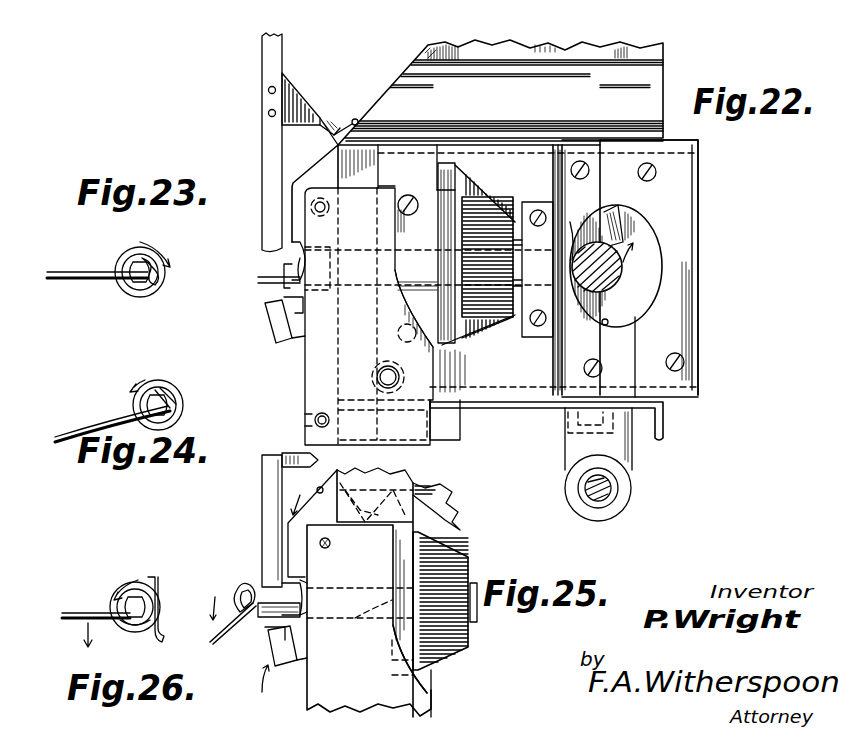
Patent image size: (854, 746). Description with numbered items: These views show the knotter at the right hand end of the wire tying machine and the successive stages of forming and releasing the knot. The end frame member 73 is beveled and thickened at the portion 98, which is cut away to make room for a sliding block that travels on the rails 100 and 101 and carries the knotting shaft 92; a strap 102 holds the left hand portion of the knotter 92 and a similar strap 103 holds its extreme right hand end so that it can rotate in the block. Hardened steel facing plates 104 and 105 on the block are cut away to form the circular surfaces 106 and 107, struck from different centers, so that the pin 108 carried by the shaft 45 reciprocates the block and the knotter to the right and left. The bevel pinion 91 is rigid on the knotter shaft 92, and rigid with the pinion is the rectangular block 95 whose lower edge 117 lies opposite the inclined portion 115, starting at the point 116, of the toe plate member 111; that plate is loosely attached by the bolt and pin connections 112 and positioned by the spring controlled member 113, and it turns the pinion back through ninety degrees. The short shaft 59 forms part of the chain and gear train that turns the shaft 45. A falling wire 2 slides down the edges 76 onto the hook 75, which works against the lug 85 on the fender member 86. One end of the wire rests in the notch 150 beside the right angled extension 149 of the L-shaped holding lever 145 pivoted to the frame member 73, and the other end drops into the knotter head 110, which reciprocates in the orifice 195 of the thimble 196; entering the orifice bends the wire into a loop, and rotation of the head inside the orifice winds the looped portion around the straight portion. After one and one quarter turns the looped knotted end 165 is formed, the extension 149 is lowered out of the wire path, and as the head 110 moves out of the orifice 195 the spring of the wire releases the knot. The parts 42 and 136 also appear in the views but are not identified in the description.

In FIG. 22, the wire 2 is at (368, 112).
In FIG. 25, the wire 2 is at (318, 487).
In FIG. 23, the wire 2 is at (68, 270).
In FIG. 24, the wire 2 is at (68, 435).
In FIG. 26, the wire 2 is at (70, 623).
In FIG. 22, the base plate 42 is at (515, 406).
In FIG. 22, the shaft 45 is at (622, 284).
In FIG. 22, the short shaft 59 is at (612, 496).
In FIG. 22, the end frame member 73 is at (562, 48).
In FIG. 25, the end frame member 73 is at (440, 492).
In FIG. 22, the hook-like projection 75 is at (338, 116).
In FIG. 25, the hook-like projection 75 is at (342, 500).
In FIG. 22, the edges 76 is at (428, 48).
In FIG. 22, the lug or bracket 85 is at (306, 96).
In FIG. 25, the lug or bracket 85 is at (292, 450).
In FIG. 22, the fender member 86 is at (262, 50).
In FIG. 25, the fender member 86 is at (262, 481).
In FIG. 22, the bevel pinion 91 is at (486, 198).
In FIG. 25, the bevel pinion 91 is at (458, 562).
In FIG. 22, the knotting shaft 92 is at (575, 228).
In FIG. 25, the knotting shaft 92 is at (478, 582).
In FIG. 22, the rectangular block 95 is at (438, 265).
In FIG. 25, the rectangular block 95 is at (390, 660).
In FIG. 22, the beveled thickened portion 98 is at (665, 80).
In FIG. 22, the rail 100 is at (635, 368).
In FIG. 22, the rail 101 is at (420, 135).
In FIG. 22, the strap 102 is at (460, 135).
In FIG. 22, the strap 103 is at (540, 204).
In FIG. 22, the facing plate 104 is at (700, 206).
In FIG. 22, the facing plate 105 is at (592, 172).
In FIG. 22, the circular surface 106 is at (660, 262).
In FIG. 22, the circular surface 107 is at (602, 325).
In FIG. 22, the pin 108 is at (624, 213).
In FIG. 25, the knotter head 110 is at (260, 619).
In FIG. 23, the knotter head 110 is at (130, 270).
In FIG. 24, the knotter head 110 is at (146, 403).
In FIG. 26, the knotter head 110 is at (126, 606).
In FIG. 22, the toe plate member 111 is at (305, 370).
In FIG. 25, the toe plate member 111 is at (307, 702).
In FIG. 22, the bolt and pin connections 112 is at (312, 209).
In FIG. 25, the bolt and pin connections 112 is at (331, 544).
In FIG. 22, the spring controlled member 113 is at (376, 375).
In FIG. 22, the inclined or beveled portion 115 is at (410, 305).
In FIG. 25, the inclined or beveled portion 115 is at (438, 673).
In FIG. 22, the point 116 is at (425, 345).
In FIG. 25, the point 116 is at (440, 680).
In FIG. 22, the lower edge 117 is at (486, 331).
In FIG. 25, the lower edge 117 is at (392, 682).
In FIG. 26, the slot 136 is at (134, 632).
In FIG. 22, the L-shaped member 145 is at (295, 342).
In FIG. 25, the L-shaped member 145 is at (300, 682).
In FIG. 22, the right angled extension 149 is at (268, 322).
In FIG. 25, the right angled extension 149 is at (270, 646).
In FIG. 22, the notch 150 is at (282, 298).
In FIG. 25, the notch 150 is at (261, 635).
In FIG. 22, the looped knotted end 165 is at (280, 265).
In FIG. 25, the looped knotted end 165 is at (246, 585).
In FIG. 26, the looped knotted end 165 is at (160, 606).
In FIG. 22, the orifice 195 is at (340, 260).
In FIG. 23, the orifice 195 is at (158, 262).
In FIG. 24, the orifice 195 is at (170, 388).
In FIG. 26, the orifice 195 is at (145, 585).
In FIG. 22, the thimble or tube 196 is at (296, 250).
In FIG. 25, the thimble or tube 196 is at (310, 588).
In FIG. 23, the thimble or tube 196 is at (124, 252).
In FIG. 24, the thimble or tube 196 is at (176, 392).
In FIG. 26, the thimble or tube 196 is at (135, 607).